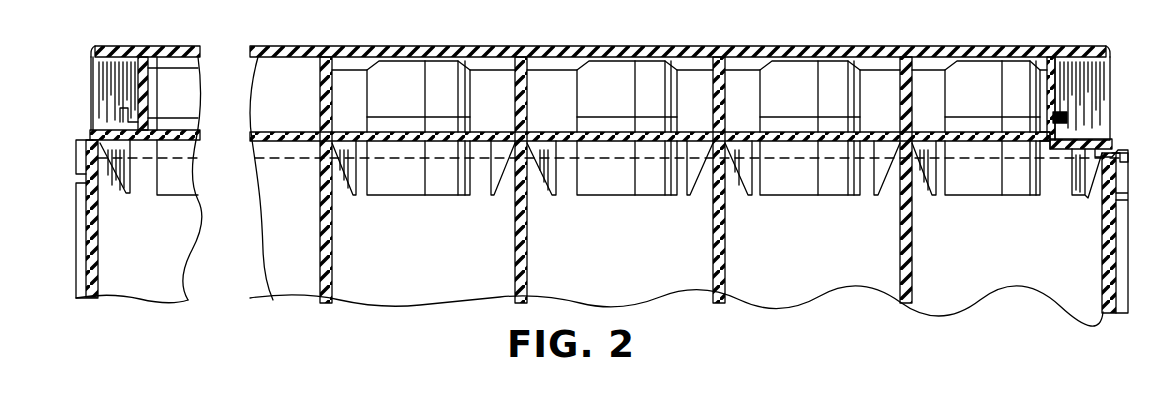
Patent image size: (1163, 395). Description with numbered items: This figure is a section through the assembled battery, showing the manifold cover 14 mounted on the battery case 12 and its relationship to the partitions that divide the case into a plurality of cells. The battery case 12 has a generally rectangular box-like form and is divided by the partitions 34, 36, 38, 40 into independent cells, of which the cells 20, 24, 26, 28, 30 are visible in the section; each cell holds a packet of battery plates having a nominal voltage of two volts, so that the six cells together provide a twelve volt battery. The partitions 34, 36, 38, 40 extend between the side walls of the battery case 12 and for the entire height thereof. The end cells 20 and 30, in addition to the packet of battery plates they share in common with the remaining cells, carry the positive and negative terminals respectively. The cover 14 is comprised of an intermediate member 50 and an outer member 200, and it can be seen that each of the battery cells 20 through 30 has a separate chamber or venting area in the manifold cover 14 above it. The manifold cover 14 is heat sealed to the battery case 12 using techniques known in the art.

The battery case 12 is at (1129, 200).
The cover 14 is at (993, 50).
The cell 20 is at (156, 258).
The cell 24 is at (429, 261).
The cell 26 is at (629, 263).
The cell 28 is at (808, 263).
The cell 30 is at (1011, 263).
The partition 34 is at (332, 253).
The partition 36 is at (527, 254).
The partition 38 is at (725, 252).
The partition 40 is at (912, 252).
The intermediate member 50 is at (1114, 142).
The outer member 200 is at (1104, 50).